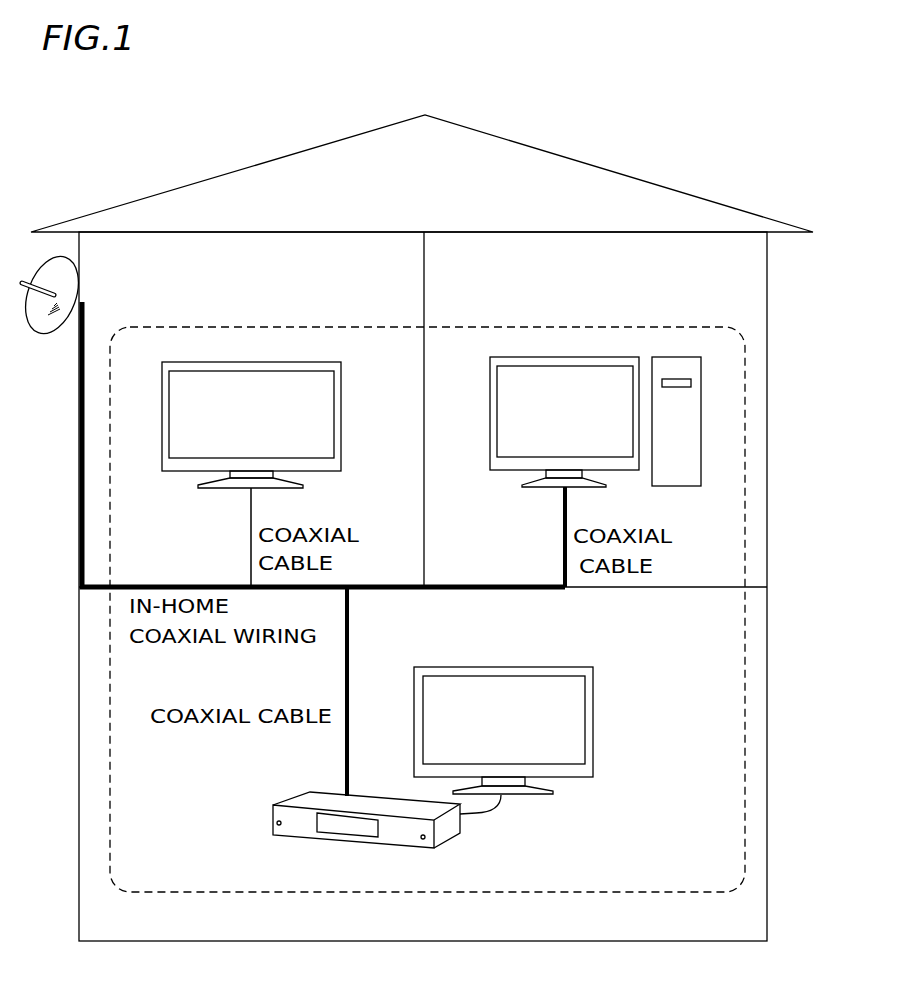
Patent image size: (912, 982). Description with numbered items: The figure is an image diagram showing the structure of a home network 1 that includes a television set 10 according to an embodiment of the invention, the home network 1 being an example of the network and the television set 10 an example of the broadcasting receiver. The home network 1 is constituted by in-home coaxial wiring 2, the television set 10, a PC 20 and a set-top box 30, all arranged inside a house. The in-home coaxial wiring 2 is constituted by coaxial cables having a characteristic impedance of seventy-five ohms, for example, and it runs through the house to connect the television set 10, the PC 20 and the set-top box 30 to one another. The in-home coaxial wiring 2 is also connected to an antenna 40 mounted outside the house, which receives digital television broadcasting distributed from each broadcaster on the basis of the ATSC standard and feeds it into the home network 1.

The home network 1 is at (707, 327).
The in-home coaxial wiring 2 is at (386, 590).
The television set 10 is at (187, 484).
The PC 20 is at (507, 485).
The set-top box 30 is at (452, 842).
The antenna 40 is at (43, 338).